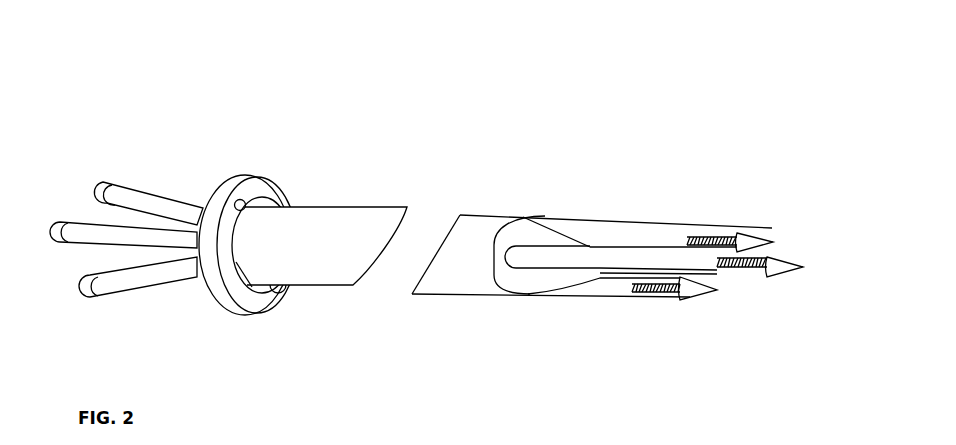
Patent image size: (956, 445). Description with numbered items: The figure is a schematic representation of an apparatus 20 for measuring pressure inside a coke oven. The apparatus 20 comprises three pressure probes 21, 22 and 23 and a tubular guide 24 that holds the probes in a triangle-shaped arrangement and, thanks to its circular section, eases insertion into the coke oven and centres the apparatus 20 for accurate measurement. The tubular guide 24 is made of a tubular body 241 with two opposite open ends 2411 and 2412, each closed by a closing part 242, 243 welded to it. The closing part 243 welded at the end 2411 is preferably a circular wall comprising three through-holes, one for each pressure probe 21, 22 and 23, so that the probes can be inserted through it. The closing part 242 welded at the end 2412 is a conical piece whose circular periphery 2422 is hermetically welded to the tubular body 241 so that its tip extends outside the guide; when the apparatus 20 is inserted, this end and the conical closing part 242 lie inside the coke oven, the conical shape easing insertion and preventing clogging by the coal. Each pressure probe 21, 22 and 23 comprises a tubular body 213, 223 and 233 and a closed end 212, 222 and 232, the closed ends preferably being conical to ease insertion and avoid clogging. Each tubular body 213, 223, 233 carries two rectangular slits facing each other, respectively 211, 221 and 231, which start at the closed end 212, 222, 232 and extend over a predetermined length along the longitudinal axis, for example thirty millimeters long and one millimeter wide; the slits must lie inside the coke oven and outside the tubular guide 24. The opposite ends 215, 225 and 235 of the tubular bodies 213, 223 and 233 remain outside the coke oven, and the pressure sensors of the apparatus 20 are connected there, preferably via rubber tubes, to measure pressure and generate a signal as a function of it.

The apparatus 20 is at (150, 76).
The pressure probe 21 is at (681, 186).
The rectangular slits 211 is at (708, 241).
The closed end 212 is at (750, 238).
The tubular body 213 is at (670, 243).
The end 215 is at (138, 198).
The pressure probe 22 is at (715, 223).
The rectangular slits 221 is at (757, 270).
The closed end 222 is at (790, 264).
The tubular body 223 is at (705, 272).
The end 225 is at (107, 237).
The pressure probe 23 is at (626, 349).
The rectangular slits 231 is at (653, 288).
The closed end 232 is at (692, 296).
The tubular body 233 is at (607, 290).
The end 235 is at (123, 290).
The tubular guide 24 is at (343, 193).
The tubular body 241 is at (463, 212).
The end 2411 is at (260, 206).
The end 2412 is at (500, 232).
The closing part 242 is at (518, 283).
The circular periphery 2422 is at (500, 256).
The closing part 243 is at (242, 196).